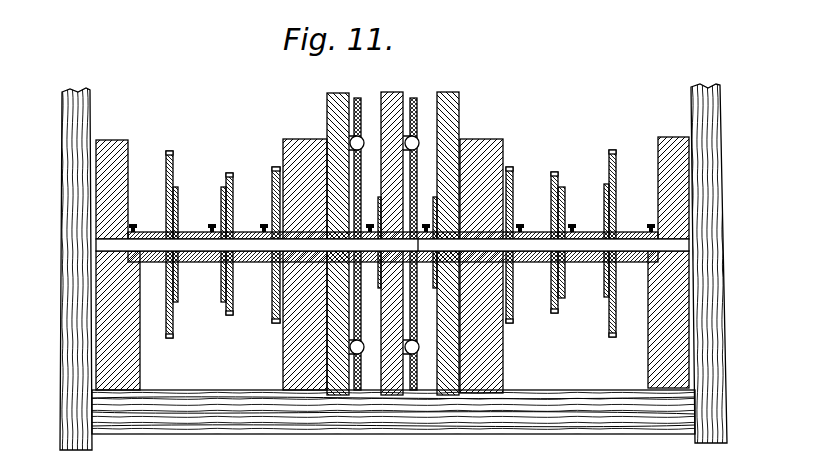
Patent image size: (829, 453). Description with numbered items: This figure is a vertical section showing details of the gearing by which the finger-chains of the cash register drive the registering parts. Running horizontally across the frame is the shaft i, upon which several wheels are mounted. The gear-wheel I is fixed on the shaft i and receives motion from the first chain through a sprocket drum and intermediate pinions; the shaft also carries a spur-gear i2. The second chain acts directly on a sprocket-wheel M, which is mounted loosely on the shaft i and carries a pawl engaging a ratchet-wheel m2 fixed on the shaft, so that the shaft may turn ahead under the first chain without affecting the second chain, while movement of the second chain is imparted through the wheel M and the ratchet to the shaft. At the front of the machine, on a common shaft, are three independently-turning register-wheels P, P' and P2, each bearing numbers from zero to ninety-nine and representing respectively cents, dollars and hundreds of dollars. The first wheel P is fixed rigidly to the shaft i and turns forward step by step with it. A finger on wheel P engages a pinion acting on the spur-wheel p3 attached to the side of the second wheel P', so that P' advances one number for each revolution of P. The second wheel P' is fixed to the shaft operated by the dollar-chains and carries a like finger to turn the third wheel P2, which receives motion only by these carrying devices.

The register-wheel P2 is at (335, 233).
The register-wheel P' is at (390, 233).
The register-wheel P is at (448, 233).
The spur-wheel p3 is at (361, 318).
The spur-gear i2 is at (166, 191).
The ratchet-wheel m2 is at (221, 205).
The sprocket-wheel M is at (230, 173).
The gear-wheel I is at (272, 192).
The shaft i is at (625, 243).